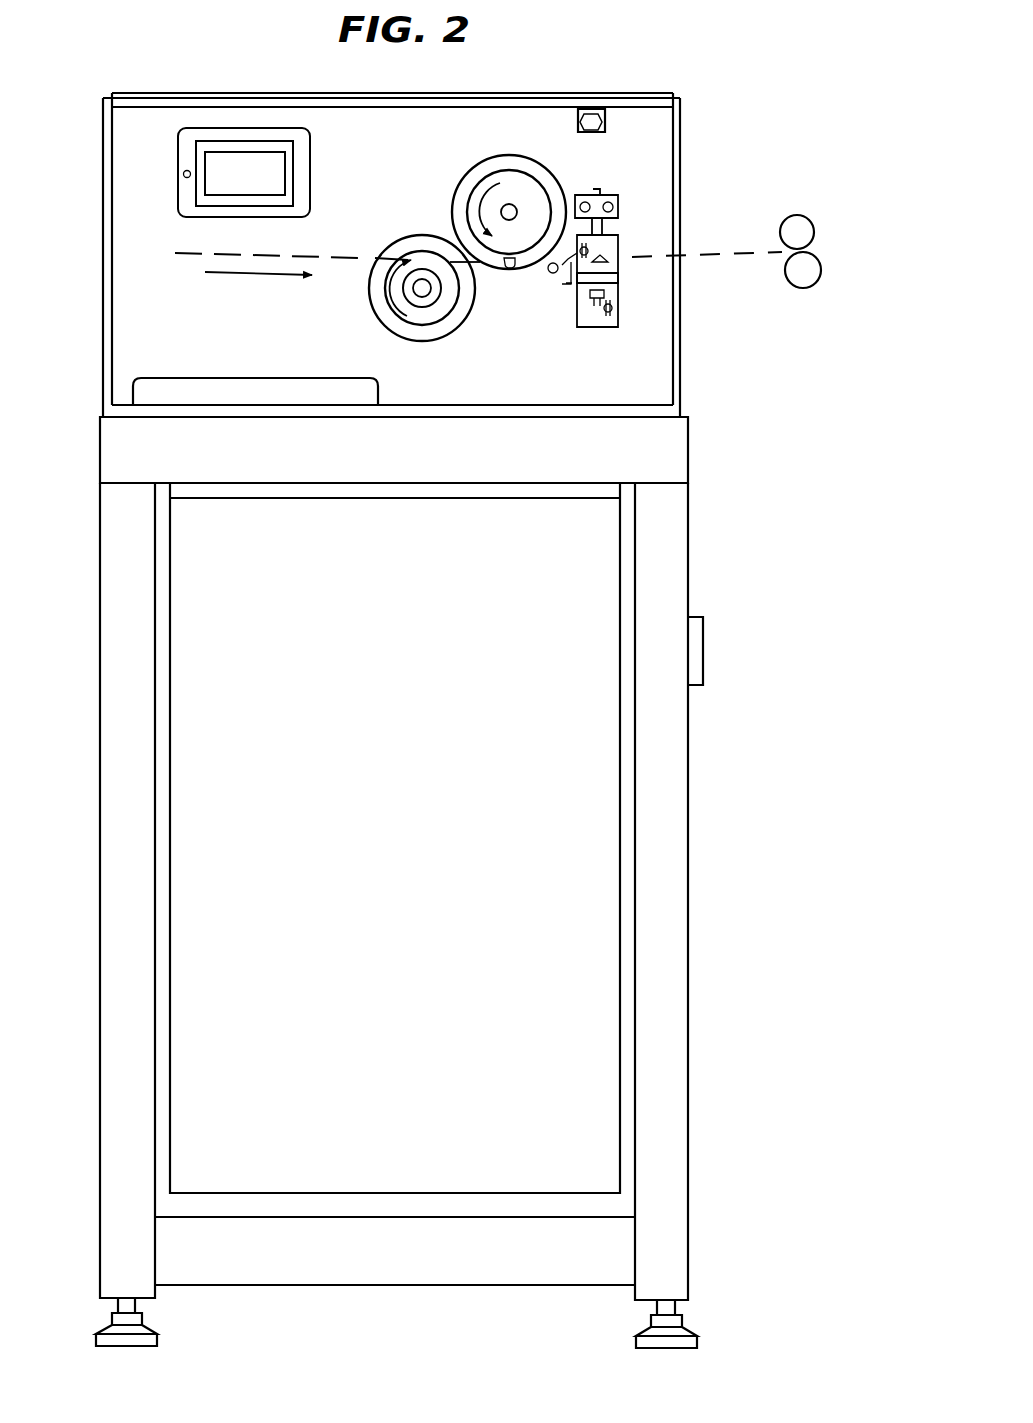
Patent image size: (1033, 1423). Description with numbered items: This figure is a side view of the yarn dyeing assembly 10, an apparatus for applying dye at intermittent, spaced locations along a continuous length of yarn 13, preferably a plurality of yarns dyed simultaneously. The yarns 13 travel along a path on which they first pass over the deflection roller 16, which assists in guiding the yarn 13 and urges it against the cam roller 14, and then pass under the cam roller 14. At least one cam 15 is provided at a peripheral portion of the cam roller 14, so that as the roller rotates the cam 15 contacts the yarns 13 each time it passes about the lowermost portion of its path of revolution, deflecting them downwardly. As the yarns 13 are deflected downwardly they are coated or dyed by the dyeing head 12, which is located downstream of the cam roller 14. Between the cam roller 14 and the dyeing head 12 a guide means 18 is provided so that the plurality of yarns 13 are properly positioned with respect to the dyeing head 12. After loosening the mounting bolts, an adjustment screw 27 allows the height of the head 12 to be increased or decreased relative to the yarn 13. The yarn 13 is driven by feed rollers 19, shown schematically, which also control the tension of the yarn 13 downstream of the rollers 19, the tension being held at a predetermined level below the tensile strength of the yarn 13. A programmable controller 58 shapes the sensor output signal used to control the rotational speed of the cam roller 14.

The yarn dyeing assembly 10 is at (100, 94).
The programmable controller 58 is at (250, 130).
The yarn 13 is at (332, 255).
The cam roller 14 is at (483, 187).
The cam 15 is at (510, 268).
The deflection roller 16 is at (440, 322).
The adjustment screw 27 is at (598, 189).
The dyeing head 12 is at (618, 277).
The guide means 18 is at (578, 275).
The feed rollers 19 is at (818, 236).